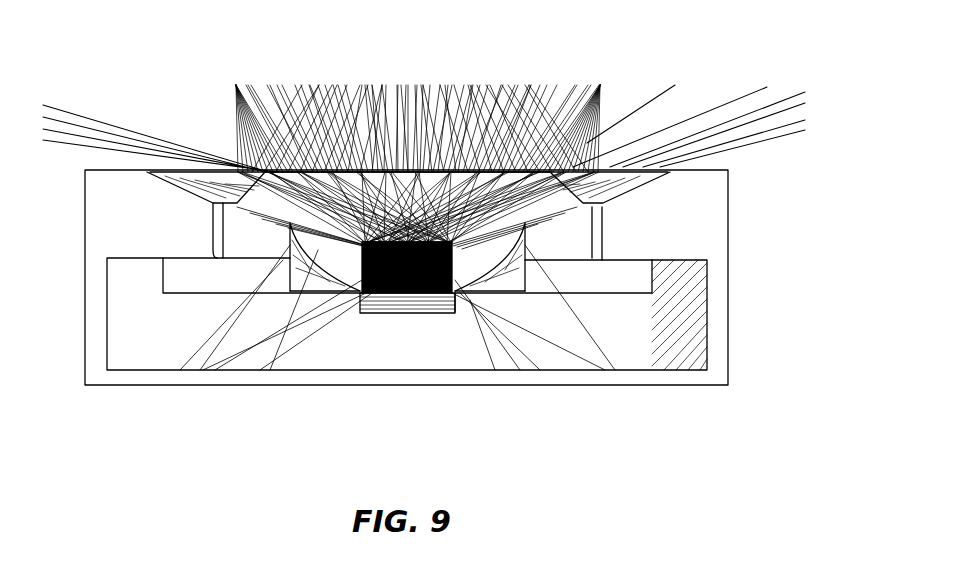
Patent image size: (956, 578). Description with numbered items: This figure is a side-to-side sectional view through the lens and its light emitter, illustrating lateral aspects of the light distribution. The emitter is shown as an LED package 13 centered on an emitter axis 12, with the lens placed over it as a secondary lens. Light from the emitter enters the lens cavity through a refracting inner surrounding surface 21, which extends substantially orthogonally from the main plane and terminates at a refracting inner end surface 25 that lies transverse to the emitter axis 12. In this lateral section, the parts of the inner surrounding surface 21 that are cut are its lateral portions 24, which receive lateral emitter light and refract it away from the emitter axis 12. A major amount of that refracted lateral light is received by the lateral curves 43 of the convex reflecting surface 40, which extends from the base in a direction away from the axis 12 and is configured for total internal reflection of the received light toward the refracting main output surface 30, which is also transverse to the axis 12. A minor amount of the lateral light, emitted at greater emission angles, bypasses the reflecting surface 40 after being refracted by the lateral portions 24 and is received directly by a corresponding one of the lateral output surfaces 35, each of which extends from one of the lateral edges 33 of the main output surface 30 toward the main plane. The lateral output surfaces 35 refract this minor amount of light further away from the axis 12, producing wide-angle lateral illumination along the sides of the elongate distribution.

The emitter axis 12 is at (408, 93).
The LED package 13 is at (412, 246).
The inner surrounding surface 21 is at (444, 280).
The lateral portions 24 is at (478, 268).
The inner end surface 25 is at (378, 246).
The main output surface 30 is at (452, 165).
The lateral edges 33 is at (266, 174).
The lateral output surfaces 35 is at (263, 177).
The reflecting surface 40 is at (510, 243).
The lateral curves 43 is at (322, 249).